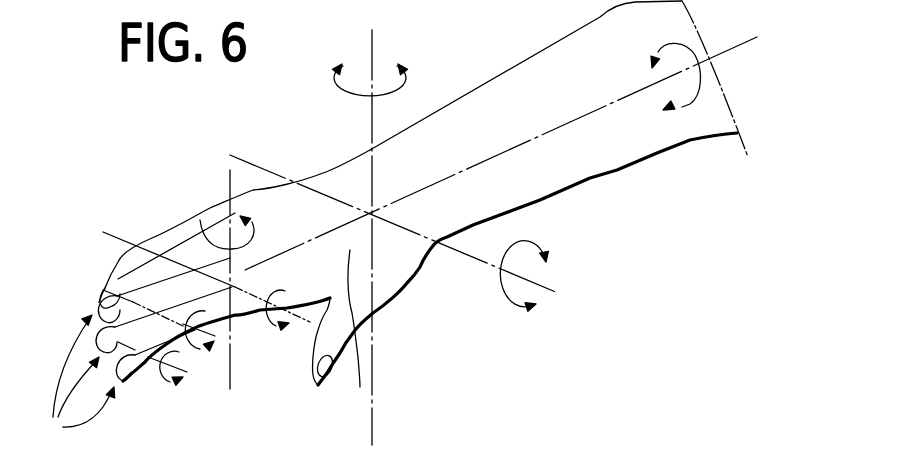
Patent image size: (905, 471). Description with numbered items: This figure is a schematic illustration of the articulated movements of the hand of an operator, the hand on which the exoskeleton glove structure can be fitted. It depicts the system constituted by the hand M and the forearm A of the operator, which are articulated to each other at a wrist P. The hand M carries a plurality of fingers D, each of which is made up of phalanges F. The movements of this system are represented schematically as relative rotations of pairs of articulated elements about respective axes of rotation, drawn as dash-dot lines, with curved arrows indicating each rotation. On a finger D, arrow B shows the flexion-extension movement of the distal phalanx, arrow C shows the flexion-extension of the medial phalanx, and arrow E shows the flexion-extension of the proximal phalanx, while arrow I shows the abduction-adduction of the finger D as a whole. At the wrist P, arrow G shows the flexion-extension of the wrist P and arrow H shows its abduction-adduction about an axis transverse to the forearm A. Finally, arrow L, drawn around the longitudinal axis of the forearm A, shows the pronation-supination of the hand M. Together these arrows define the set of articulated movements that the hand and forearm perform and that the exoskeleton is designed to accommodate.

The forearm A is at (606, 168).
The arrow showing flexion-extension movement of the distal phalanx B is at (163, 385).
The arrow showing flexion-extension of the medial phalanx C is at (196, 348).
The finger D is at (78, 379).
The arrow showing flexion-extension of the proximal phalanx E is at (267, 330).
The phalanx F is at (170, 264).
The arrow showing flexion-extension of the wrist G is at (503, 310).
The arrow showing abduction-adduction of the wrist H is at (405, 80).
The arrow showing abduction-adduction of the finger I is at (200, 220).
The arrow showing pronation-supination of the hand L is at (700, 78).
The hand M is at (360, 390).
The wrist P is at (334, 188).